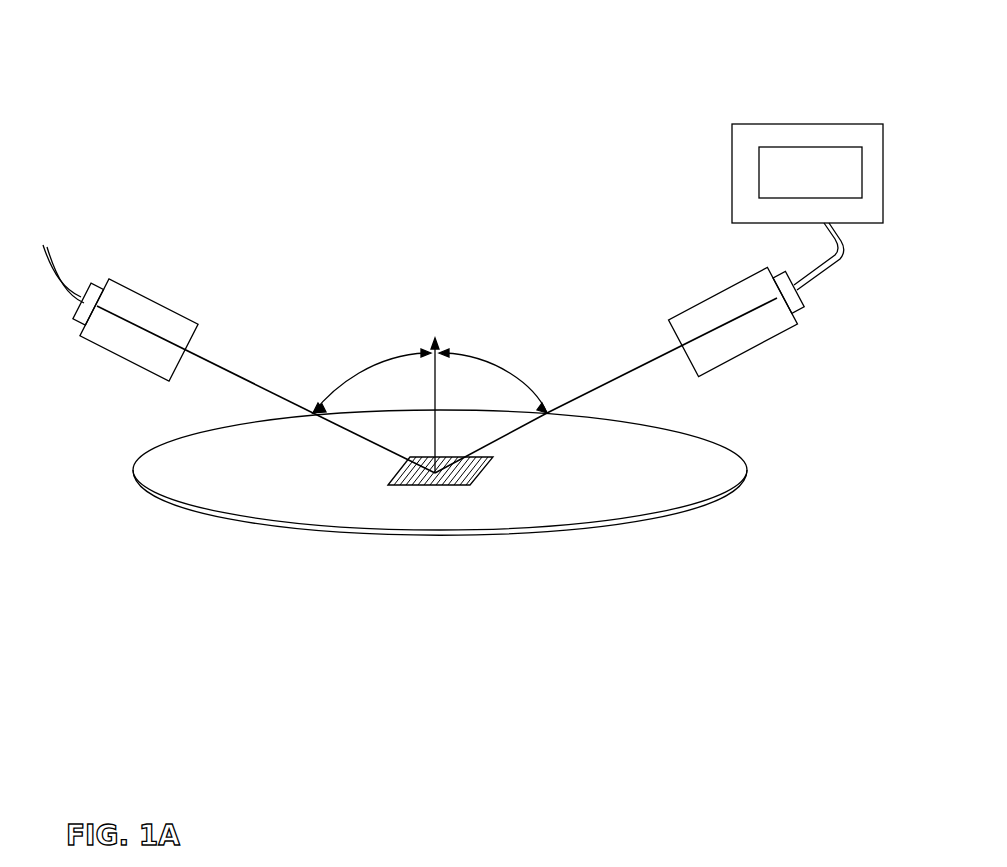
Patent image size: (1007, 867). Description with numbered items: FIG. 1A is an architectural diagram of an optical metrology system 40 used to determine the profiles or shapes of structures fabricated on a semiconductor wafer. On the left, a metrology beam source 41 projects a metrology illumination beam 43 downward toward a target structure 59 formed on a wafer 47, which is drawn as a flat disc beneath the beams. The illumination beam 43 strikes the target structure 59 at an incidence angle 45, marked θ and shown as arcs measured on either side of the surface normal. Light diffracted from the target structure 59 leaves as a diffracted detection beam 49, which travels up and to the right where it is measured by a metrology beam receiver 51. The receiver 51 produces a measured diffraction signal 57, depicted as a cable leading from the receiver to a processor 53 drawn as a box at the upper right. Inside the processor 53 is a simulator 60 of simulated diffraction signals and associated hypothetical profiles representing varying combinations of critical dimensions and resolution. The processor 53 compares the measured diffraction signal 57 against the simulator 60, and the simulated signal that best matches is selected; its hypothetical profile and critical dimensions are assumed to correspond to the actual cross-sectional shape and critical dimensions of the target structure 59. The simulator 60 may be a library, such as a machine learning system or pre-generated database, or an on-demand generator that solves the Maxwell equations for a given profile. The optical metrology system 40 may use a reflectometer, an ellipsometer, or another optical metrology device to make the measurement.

The optical metrology system 40 is at (442, 100).
The metrology beam source 41 is at (172, 281).
The metrology illumination beam 43 is at (215, 364).
The incidence angle 45 is at (368, 319).
The wafer 47 is at (180, 438).
The diffracted detection beam 49 is at (625, 373).
The metrology beam receiver 51 is at (737, 388).
The processor 53 is at (813, 123).
The measured diffraction signal 57 is at (823, 263).
The target structure 59 is at (427, 485).
The simulator 60 is at (810, 172).